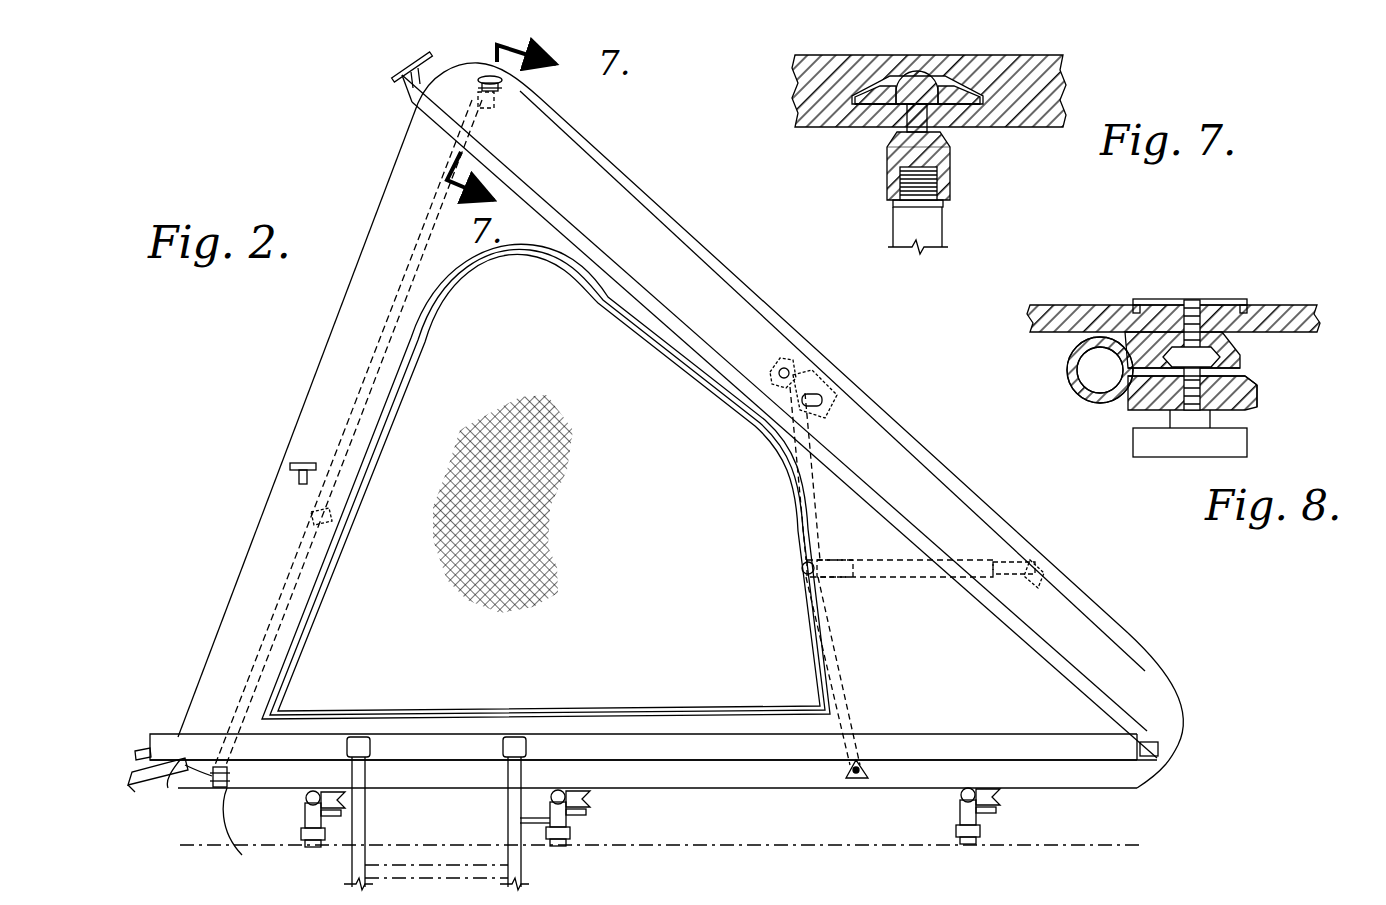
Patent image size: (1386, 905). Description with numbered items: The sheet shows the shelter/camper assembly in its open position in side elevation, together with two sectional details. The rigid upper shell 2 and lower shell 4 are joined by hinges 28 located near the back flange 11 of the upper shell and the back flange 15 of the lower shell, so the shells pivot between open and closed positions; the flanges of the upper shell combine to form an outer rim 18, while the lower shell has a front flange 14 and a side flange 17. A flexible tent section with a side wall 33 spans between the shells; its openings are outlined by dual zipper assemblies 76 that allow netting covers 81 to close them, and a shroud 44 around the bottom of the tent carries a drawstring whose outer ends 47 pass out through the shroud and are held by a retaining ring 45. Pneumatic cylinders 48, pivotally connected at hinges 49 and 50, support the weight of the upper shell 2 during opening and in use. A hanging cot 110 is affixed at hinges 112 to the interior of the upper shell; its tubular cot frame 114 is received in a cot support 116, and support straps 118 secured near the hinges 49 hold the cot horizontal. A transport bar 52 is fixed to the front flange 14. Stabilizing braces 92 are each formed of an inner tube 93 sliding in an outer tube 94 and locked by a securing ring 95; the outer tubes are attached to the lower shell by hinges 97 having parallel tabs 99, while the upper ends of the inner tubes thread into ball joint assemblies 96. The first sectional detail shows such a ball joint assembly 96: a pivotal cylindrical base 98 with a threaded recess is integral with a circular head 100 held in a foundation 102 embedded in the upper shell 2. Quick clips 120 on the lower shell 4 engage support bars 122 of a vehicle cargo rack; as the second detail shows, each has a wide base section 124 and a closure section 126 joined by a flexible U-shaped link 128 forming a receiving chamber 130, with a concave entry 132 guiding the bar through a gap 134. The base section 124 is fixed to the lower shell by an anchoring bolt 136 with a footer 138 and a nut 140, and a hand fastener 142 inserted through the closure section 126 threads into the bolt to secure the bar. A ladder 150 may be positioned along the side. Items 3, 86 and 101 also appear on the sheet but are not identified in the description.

In FIG. 2, the upper shell 2 is at (953, 507).
In FIG. 7, the upper shell 2 is at (800, 100).
In FIG. 2, the hinge tab 3 is at (408, 72).
In FIG. 2, the lower shell 4 is at (1115, 775).
In FIG. 8, the lower shell 4 is at (1300, 320).
In FIG. 2, the back flange of upper shell 11 is at (1183, 710).
In FIG. 2, the front flange of lower shell 14 is at (163, 795).
In FIG. 2, the back flange of lower shell 15 is at (275, 785).
In FIG. 2, the side flange of lower shell 17 is at (1160, 781).
In FIG. 2, the outer rim 18 is at (560, 217).
In FIG. 2, the hinges 28 is at (1153, 748).
In FIG. 2, the side wall 33 is at (412, 187).
In FIG. 2, the shroud 44 is at (172, 747).
In FIG. 2, the retaining ring 45 is at (140, 750).
In FIG. 2, the outer ends of drawstring 47 is at (130, 768).
In FIG. 2, the pneumatic cylinders 48 is at (826, 590).
In FIG. 2, the hinges 49 is at (790, 368).
In FIG. 2, the hinges 50 is at (853, 778).
In FIG. 2, the transport bar 52 is at (130, 786).
In FIG. 2, the dual zipper assemblies 76 is at (390, 420).
In FIG. 2, the netting covers 81 is at (583, 310).
In FIG. 2, the retainer bracket 86 is at (300, 463).
In FIG. 2, the stabilizing braces 92 is at (335, 431).
In FIG. 2, the inner cylindrical tube 93 is at (412, 268).
In FIG. 2, the outer cylindrical tube 94 is at (292, 580).
In FIG. 2, the securing ring 95 is at (316, 518).
In FIG. 2, the ball joint assemblies 96 is at (468, 76).
In FIG. 7, the ball joint assemblies 96 is at (958, 155).
In FIG. 2, the hinges 97 is at (212, 777).
In FIG. 2, the pivotal cylindrical base 98 is at (488, 96).
In FIG. 7, the pivotal cylindrical base 98 is at (893, 165).
In FIG. 2, the parallel tabs 99 is at (242, 855).
In FIG. 7, the circular head 100 is at (935, 75).
In FIG. 2, the rod bracket 101 is at (212, 770).
In FIG. 2, the foundation 102 is at (503, 82).
In FIG. 7, the foundation 102 is at (970, 104).
In FIG. 2, the hanging cot 110 is at (918, 582).
In FIG. 2, the hinges 112 is at (1035, 570).
In FIG. 2, the tubular cot frame 114 is at (1010, 565).
In FIG. 2, the cot support 116 is at (907, 573).
In FIG. 2, the support straps 118 is at (812, 455).
In FIG. 2, the quick clips 120 is at (349, 798).
In FIG. 8, the quick clips 120 is at (1292, 392).
In FIG. 2, the support bars 122 is at (320, 803).
In FIG. 8, the support bars 122 is at (1068, 367).
In FIG. 8, the base section 124 is at (1128, 340).
In FIG. 8, the closure section 126 is at (1135, 405).
In FIG. 8, the U-shaped link 128 is at (1068, 385).
In FIG. 8, the receiving chamber 130 is at (1080, 400).
In FIG. 8, the concave entry 132 is at (1240, 371).
In FIG. 8, the gap 134 is at (1250, 410).
In FIG. 8, the anchoring bolt 136 is at (1236, 300).
In FIG. 8, the footer 138 is at (1167, 300).
In FIG. 8, the nut 140 is at (1215, 355).
In FIG. 8, the hand fastener 142 is at (1170, 450).
In FIG. 2, the ladder 150 is at (521, 866).